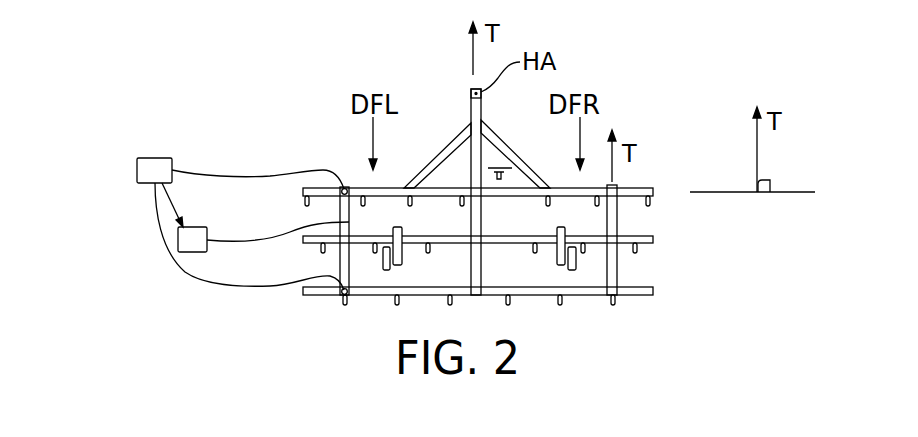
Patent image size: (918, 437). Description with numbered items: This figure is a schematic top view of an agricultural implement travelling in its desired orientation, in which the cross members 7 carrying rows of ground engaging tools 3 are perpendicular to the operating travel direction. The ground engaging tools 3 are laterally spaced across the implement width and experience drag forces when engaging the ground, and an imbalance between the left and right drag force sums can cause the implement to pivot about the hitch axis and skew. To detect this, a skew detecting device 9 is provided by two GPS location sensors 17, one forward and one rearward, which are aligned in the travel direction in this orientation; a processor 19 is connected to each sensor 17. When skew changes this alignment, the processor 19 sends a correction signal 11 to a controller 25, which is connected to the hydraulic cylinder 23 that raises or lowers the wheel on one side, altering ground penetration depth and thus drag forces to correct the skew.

The ground engaging tools 3 is at (508, 299).
The cross members 7 is at (647, 288).
The skew detecting device 9 is at (117, 193).
The correction signal 11 is at (174, 197).
The GPS location sensors 17 is at (344, 188).
The processor 19 is at (153, 158).
The hydraulic cylinders 23 is at (402, 230).
The controller 25 is at (192, 252).